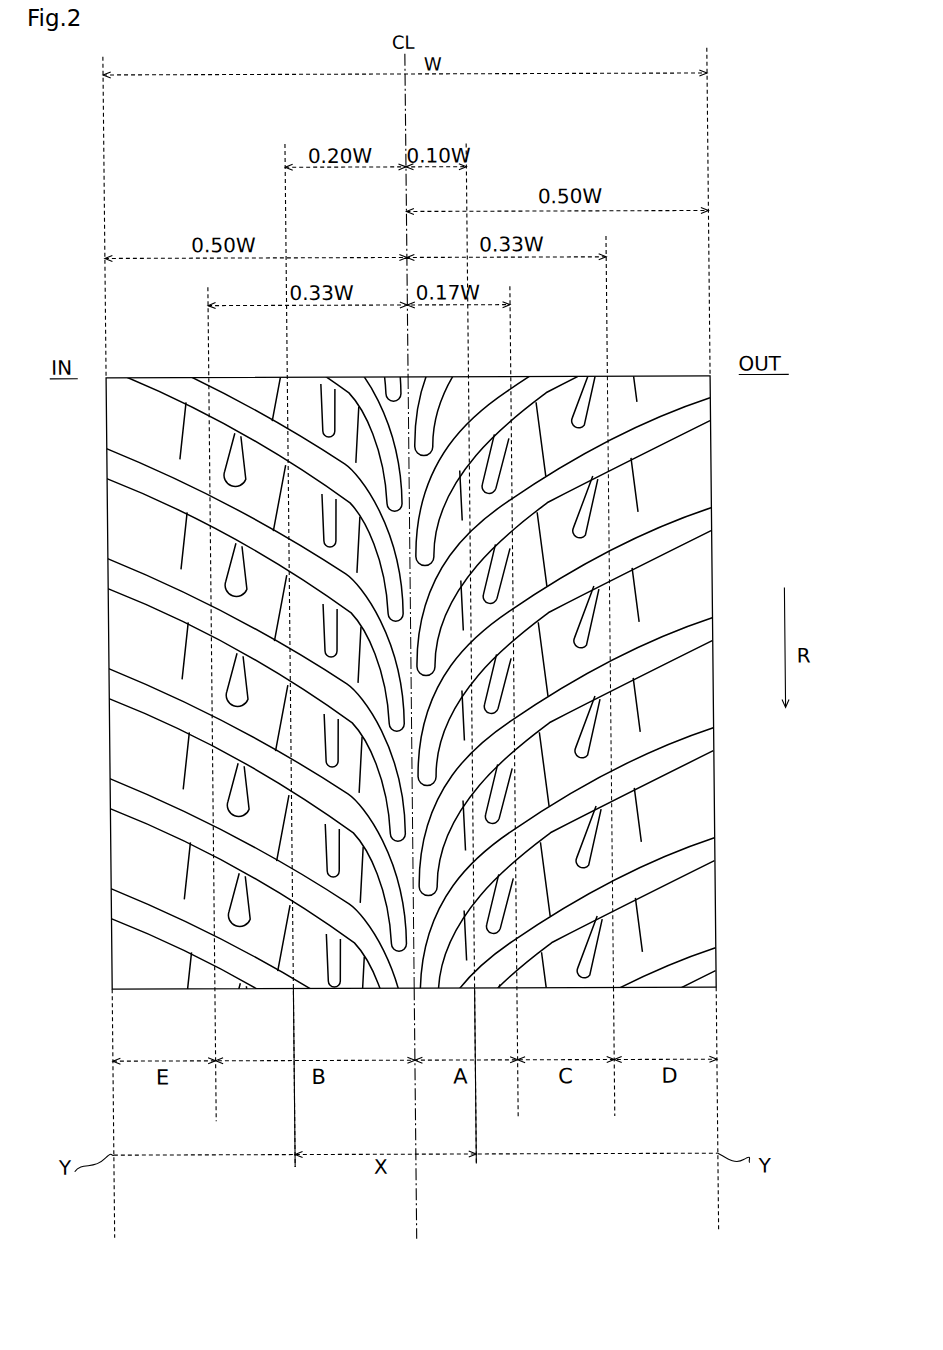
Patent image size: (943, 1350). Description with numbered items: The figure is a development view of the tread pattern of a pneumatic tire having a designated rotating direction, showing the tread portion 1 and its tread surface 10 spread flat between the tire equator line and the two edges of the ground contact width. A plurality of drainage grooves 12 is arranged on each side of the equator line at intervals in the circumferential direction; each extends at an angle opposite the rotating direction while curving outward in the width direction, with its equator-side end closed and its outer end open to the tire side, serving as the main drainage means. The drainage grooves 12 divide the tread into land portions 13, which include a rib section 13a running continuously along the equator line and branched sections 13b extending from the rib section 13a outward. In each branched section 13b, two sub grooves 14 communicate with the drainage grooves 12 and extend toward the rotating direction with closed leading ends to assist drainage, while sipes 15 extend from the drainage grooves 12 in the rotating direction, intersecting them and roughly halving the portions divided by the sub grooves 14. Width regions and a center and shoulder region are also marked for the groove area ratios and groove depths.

The tread portion 1 is at (468, 609).
The tread surface 10 is at (411, 682).
The drainage grooves 12 is at (121, 470).
The land portions 13 is at (466, 661).
The rib section 13a is at (411, 682).
The branched sections 13b is at (610, 681).
The sub grooves 14 is at (312, 991).
The sipes 15 is at (634, 478).